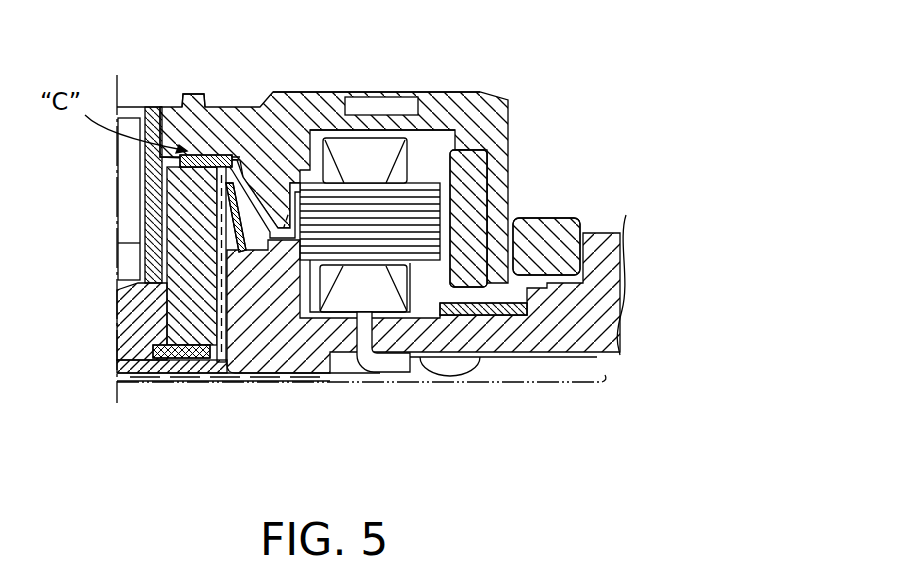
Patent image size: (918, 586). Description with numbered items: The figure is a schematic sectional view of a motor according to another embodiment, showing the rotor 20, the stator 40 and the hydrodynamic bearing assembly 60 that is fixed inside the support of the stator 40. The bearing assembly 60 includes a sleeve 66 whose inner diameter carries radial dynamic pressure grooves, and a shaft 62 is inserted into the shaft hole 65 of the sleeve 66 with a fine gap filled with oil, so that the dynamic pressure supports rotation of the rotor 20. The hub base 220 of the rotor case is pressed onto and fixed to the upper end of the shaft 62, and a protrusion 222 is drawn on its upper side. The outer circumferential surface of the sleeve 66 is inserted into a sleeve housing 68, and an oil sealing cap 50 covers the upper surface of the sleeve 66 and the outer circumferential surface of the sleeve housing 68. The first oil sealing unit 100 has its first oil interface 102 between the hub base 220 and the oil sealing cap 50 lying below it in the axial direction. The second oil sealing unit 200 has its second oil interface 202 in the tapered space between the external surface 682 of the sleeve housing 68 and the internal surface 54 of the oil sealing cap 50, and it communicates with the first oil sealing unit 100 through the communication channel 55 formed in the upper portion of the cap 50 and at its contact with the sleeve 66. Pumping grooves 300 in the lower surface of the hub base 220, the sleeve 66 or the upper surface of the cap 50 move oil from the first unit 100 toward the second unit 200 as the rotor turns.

The rotor 20 is at (530, 95).
The hub base 220 is at (175, 110).
The protrusion 222 is at (222, 107).
The oil sealing cap 50 is at (248, 150).
The first oil sealing unit 100 is at (253, 154).
The first oil interface 102 is at (336, 130).
The internal surface of the oil sealing cap 54 is at (422, 104).
The pumping grooves 300 is at (178, 160).
The communication channel 55 is at (232, 196).
The external surface of the sleeve housing 682 is at (220, 215).
The shaft 62 is at (120, 303).
The shaft hole 65 is at (122, 329).
The sleeve 66 is at (170, 365).
The sleeve housing 68 is at (215, 362).
The hydrodynamic bearing assembly 60 is at (227, 355).
The second oil sealing unit 200 is at (300, 330).
The second oil interface 202 is at (287, 255).
The stator 40 is at (390, 338).